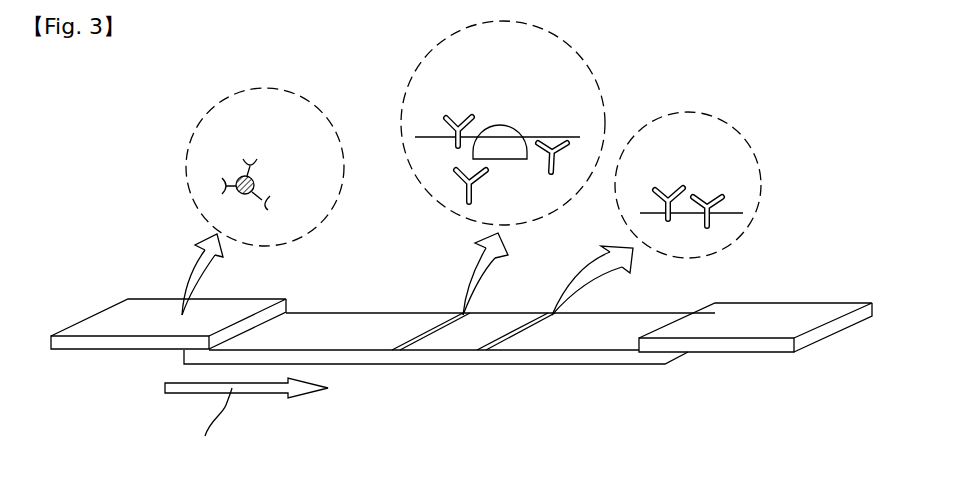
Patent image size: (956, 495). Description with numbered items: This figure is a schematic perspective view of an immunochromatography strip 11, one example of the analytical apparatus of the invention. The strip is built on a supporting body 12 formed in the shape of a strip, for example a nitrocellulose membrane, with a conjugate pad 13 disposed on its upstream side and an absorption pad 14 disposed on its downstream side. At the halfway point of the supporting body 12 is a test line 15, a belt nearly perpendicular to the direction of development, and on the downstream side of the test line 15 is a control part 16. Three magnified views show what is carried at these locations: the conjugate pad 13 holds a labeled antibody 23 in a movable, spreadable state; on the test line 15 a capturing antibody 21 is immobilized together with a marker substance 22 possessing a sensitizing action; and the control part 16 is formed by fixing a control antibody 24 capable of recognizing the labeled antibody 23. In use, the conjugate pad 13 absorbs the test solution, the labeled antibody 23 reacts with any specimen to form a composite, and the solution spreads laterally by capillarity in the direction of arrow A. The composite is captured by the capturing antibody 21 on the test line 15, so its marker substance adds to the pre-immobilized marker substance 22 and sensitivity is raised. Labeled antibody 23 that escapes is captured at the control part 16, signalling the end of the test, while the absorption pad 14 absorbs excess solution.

The immunochromatography strip 11 is at (802, 222).
The supporting body 12 is at (602, 350).
The conjugate pad 13 is at (145, 328).
The absorption pad 14 is at (735, 336).
The test line 15 is at (392, 351).
The control part 16 is at (477, 351).
The capturing antibody 21 is at (470, 117).
The marker substance 22 is at (508, 137).
The labeled antibody 23 is at (258, 183).
The control antibody 24 is at (668, 190).